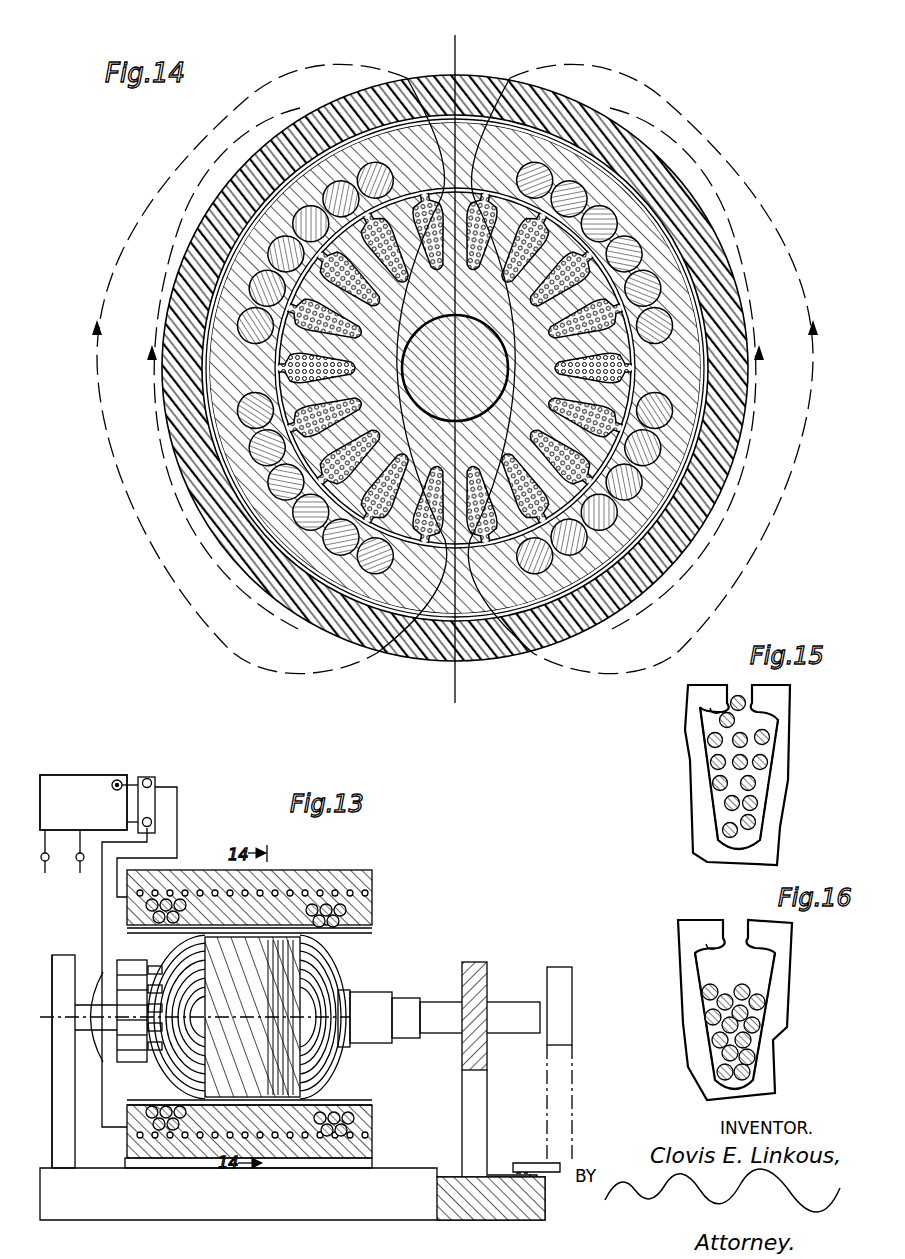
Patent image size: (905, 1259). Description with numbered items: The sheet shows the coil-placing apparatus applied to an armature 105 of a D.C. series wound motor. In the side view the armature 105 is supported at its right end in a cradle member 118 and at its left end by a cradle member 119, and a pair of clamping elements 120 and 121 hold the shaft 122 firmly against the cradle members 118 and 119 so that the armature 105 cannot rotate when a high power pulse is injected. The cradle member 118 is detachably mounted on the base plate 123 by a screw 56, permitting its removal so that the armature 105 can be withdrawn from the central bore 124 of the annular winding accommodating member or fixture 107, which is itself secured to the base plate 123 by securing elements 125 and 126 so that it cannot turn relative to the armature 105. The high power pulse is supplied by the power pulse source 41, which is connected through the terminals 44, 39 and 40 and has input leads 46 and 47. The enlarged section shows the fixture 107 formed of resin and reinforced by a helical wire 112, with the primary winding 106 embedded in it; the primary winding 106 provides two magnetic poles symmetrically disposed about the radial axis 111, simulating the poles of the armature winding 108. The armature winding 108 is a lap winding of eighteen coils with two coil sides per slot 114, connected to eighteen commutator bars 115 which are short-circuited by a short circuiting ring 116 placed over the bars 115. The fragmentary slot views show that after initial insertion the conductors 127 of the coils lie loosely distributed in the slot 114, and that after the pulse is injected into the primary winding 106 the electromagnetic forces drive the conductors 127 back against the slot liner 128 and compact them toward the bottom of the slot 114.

In FIG. 13, the terminal block 39 is at (150, 779).
In FIG. 13, the terminal 40 is at (152, 822).
In FIG. 13, the power pulse source 41 is at (70, 773).
In FIG. 13, the terminal 44 is at (120, 779).
In FIG. 13, the input lead 46 is at (44, 866).
In FIG. 13, the input lead 47 is at (79, 866).
In FIG. 13, the screw 56 is at (528, 1162).
In FIG. 14, the armature 105 is at (455, 368).
In FIG. 13, the armature 105 is at (352, 985).
In FIG. 15, the armature 105 is at (794, 710).
In FIG. 16, the armature 105 is at (795, 952).
In FIG. 14, the primary winding 106 is at (640, 235).
In FIG. 13, the primary winding 106 is at (372, 910).
In FIG. 14, the winding accommodating member or fixture 107 is at (746, 292).
In FIG. 13, the winding accommodating member or fixture 107 is at (290, 870).
In FIG. 13, the armature winding 108 is at (340, 968).
In FIG. 14, the radial axis 111 is at (455, 57).
In FIG. 14, the helical wire 112 is at (697, 528).
In FIG. 13, the helical wire 112 is at (320, 890).
In FIG. 13, the slot 114 is at (372, 1062).
In FIG. 15, the slot 114 is at (713, 708).
In FIG. 16, the slot 114 is at (712, 945).
In FIG. 13, the commutator bars 115 is at (118, 972).
In FIG. 13, the short circuiting ring 116 is at (150, 968).
In FIG. 13, the cradle member 118 is at (487, 1128).
In FIG. 13, the cradle member 119 is at (54, 1127).
In FIG. 13, the clamping element 120 is at (472, 968).
In FIG. 13, the clamping element 121 is at (60, 963).
In FIG. 14, the shaft 122 is at (462, 322).
In FIG. 13, the base plate 123 is at (407, 1177).
In FIG. 14, the central bore 124 is at (418, 560).
In FIG. 13, the securing element 125 is at (116, 1160).
In FIG. 13, the securing element 126 is at (372, 1150).
In FIG. 14, the conductors 127 is at (578, 388).
In FIG. 15, the conductors 127 is at (754, 783).
In FIG. 16, the conductors 127 is at (760, 1045).
In FIG. 14, the slot liner 128 is at (486, 490).
In FIG. 15, the slot liner 128 is at (718, 806).
In FIG. 16, the slot liner 128 is at (716, 1030).